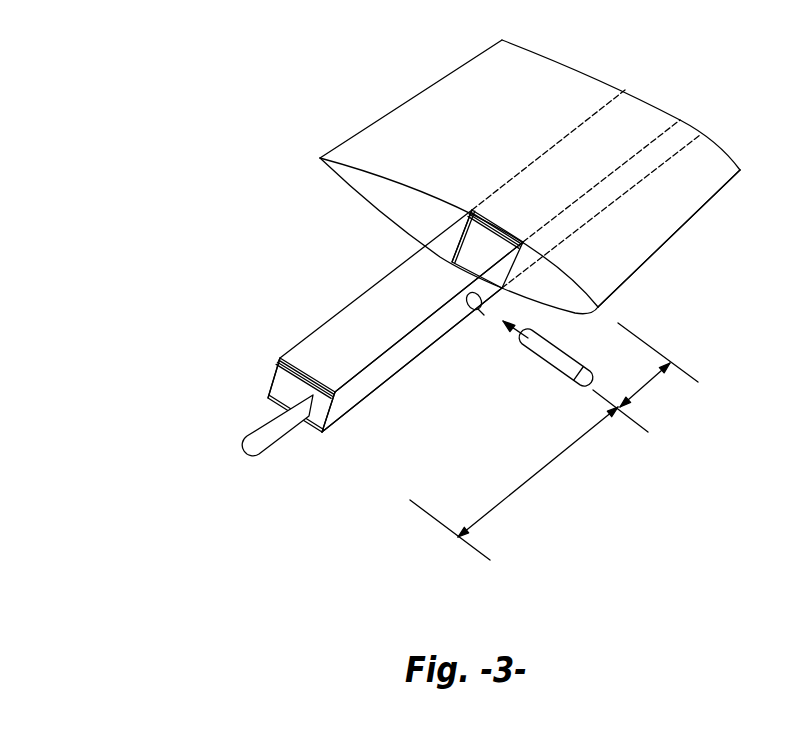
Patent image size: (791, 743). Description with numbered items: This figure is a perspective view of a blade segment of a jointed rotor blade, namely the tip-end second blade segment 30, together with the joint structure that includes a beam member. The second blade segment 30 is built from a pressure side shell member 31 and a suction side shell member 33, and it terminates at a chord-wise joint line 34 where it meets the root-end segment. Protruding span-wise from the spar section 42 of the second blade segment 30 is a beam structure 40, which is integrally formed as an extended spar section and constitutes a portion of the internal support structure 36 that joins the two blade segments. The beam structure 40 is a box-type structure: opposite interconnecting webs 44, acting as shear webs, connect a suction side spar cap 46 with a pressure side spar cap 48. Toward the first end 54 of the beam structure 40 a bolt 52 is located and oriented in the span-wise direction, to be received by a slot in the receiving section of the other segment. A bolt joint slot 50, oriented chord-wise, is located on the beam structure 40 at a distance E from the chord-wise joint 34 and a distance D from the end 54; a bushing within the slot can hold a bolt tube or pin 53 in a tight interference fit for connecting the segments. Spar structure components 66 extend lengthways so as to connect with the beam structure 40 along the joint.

The second blade segment 30 is at (410, 120).
The pressure side shell member 31 is at (560, 75).
The suction side shell member 33 is at (395, 228).
The chord-wise joint line 34 is at (420, 200).
The internal support structure 36 is at (418, 380).
The beam structure 40 is at (340, 332).
The spar section 42 is at (643, 107).
The interconnecting web 44 is at (445, 335).
The suction side spar cap 46 is at (282, 387).
The pressure side spar cap 48 is at (277, 377).
The bolt joint slot 50 is at (477, 312).
The bolt 52 is at (283, 434).
The bolt tube or pin 53 is at (543, 360).
The first end of the beam structure 54 is at (340, 438).
The spar structure components 66 is at (590, 158).
The distance D is at (580, 433).
The distance E is at (643, 385).